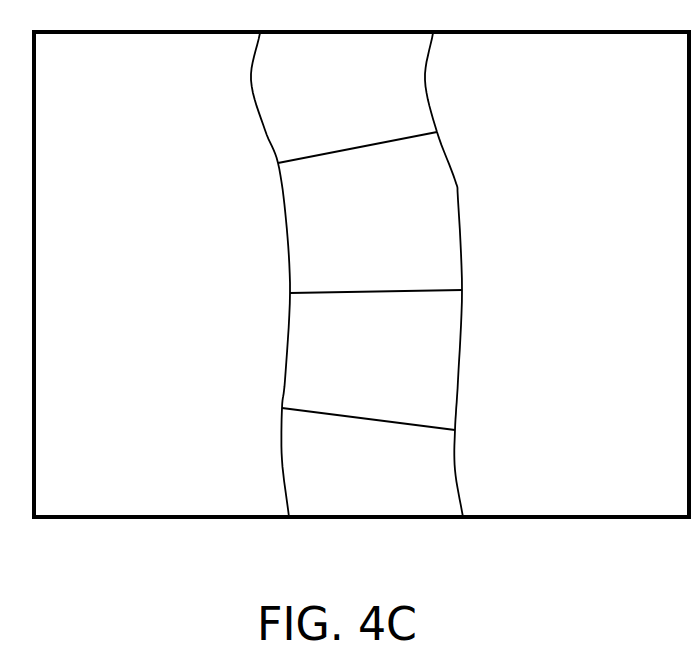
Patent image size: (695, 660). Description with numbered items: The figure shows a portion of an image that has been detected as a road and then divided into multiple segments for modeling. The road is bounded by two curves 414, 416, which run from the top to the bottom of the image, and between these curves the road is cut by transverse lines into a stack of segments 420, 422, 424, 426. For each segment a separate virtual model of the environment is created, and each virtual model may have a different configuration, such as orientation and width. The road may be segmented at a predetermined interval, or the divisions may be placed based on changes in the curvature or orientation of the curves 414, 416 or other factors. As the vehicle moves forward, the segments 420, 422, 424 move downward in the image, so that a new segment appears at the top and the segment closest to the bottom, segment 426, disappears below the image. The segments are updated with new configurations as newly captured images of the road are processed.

The curve 414 is at (284, 222).
The curve 416 is at (457, 200).
The segment 420 is at (357, 121).
The segment 422 is at (376, 251).
The segment 424 is at (365, 363).
The segment 426 is at (368, 446).